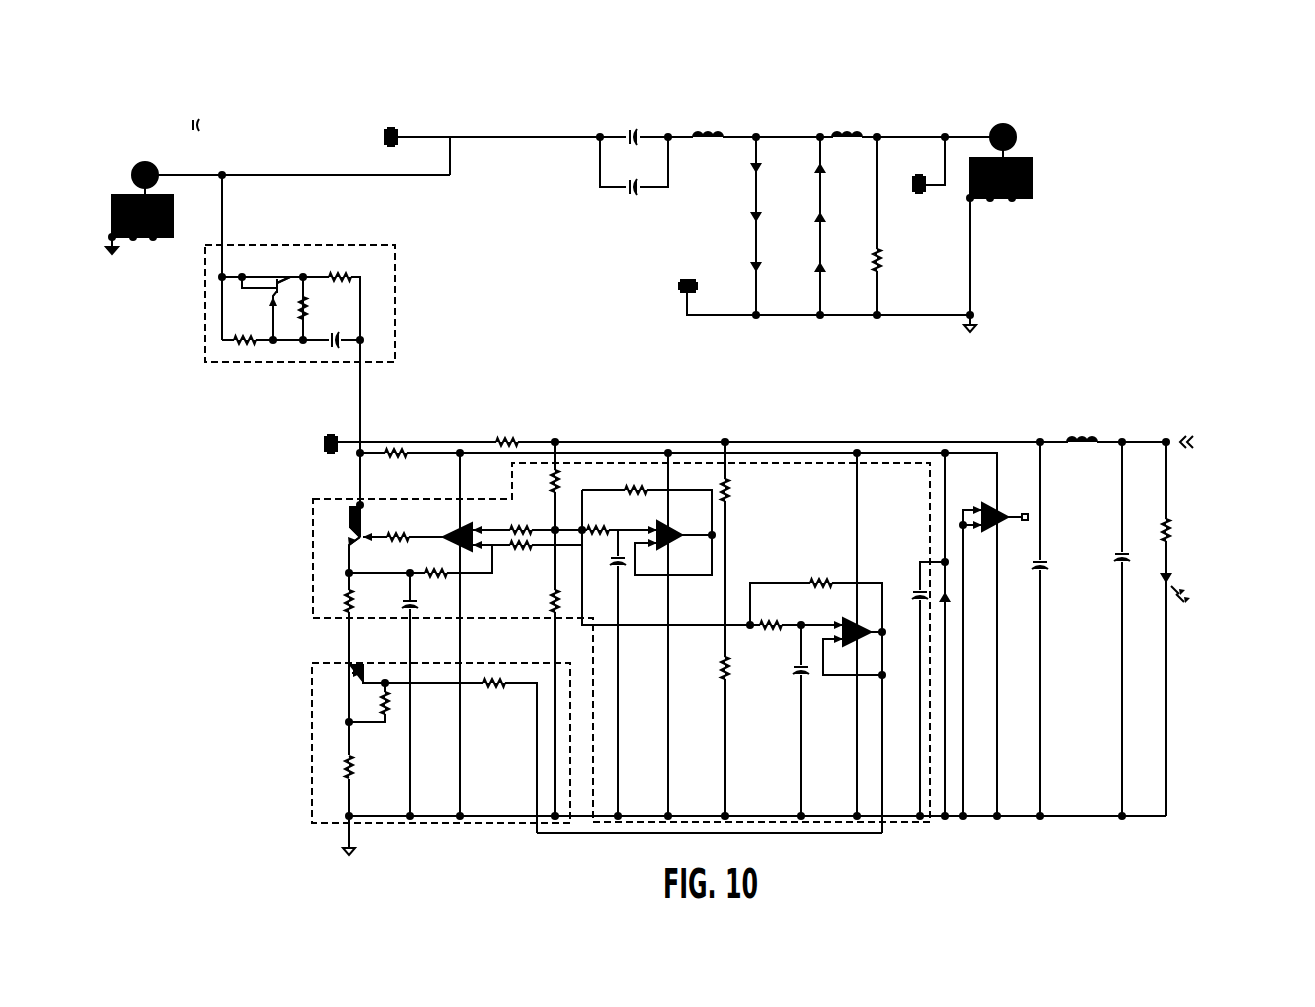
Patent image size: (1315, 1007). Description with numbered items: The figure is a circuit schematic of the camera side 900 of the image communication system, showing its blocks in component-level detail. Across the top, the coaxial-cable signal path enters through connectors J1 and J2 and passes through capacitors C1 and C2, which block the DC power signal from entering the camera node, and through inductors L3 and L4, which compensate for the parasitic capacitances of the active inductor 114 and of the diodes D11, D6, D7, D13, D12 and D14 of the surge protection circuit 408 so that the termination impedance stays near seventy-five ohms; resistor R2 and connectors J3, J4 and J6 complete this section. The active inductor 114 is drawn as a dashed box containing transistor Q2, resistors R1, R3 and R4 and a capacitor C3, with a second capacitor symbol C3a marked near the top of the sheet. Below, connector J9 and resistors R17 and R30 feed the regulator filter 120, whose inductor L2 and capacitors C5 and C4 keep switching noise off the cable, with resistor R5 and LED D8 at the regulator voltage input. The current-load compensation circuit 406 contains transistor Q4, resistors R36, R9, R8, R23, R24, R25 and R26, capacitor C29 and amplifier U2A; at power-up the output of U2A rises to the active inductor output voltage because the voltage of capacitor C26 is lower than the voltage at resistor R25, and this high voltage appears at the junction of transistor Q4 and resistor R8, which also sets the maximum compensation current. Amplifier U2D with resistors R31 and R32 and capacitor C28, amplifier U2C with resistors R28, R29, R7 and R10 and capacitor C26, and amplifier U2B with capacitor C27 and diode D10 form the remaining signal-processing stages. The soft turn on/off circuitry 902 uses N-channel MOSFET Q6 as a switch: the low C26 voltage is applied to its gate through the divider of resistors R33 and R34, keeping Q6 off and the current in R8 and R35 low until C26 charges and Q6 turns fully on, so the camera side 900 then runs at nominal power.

The camera side 900 is at (571, 188).
The active inductor 114 is at (307, 314).
The surge protection circuit 408 is at (740, 215).
The filter 120 is at (1073, 459).
The current-load compensation circuit 406 is at (298, 508).
The soft turn on/off circuitry 902 is at (298, 708).
The connector J1 is at (385, 121).
The connector J2 is at (137, 200).
The connector J3 is at (999, 158).
The connector J4 is at (917, 171).
The connector J6 is at (675, 289).
The connector J9 is at (330, 428).
The capacitor C1 is at (634, 123).
The capacitor C2 is at (634, 175).
The capacitor C3 is at (340, 327).
The capacitor C3 (top symbol) C3a is at (198, 111).
The capacitor C4 is at (1111, 554).
The capacitor C5 is at (1030, 559).
The capacitor C26 is at (789, 664).
The capacitor C27 is at (908, 595).
The capacitor C28 is at (606, 557).
The capacitor C29 is at (400, 604).
The inductor L2 is at (1082, 426).
The inductor L3 is at (705, 119).
The inductor L4 is at (847, 121).
The diode D6 is at (769, 210).
The diode D7 is at (769, 259).
The LED D8 is at (1178, 579).
The zener diode D10 is at (964, 589).
The diode D11 is at (774, 162).
The diode D12 is at (839, 210).
The diode D13 is at (839, 162).
The diode D14 is at (839, 259).
The transistor Q2 is at (275, 271).
The transistor Q4 is at (339, 526).
The N-channel MOSFET Q6 is at (340, 679).
The resistor R1 is at (340, 263).
The resistor R2 is at (891, 256).
The resistor R3 is at (293, 311).
The resistor R4 is at (246, 327).
The resistor R5 is at (1180, 530).
The resistor R7 is at (737, 493).
The resistor R8 is at (362, 604).
The resistor R9 is at (437, 561).
The resistor R10 is at (742, 674).
The resistor R17 is at (510, 428).
The resistor R23 is at (540, 480).
The resistor R24 is at (540, 600).
The resistor R25 is at (525, 517).
The resistor R26 is at (525, 558).
The resistor R28 is at (825, 567).
The resistor R29 is at (777, 612).
The resistor R30 is at (400, 467).
The resistor R31 is at (602, 517).
The resistor R32 is at (637, 478).
The resistor R33 is at (497, 698).
The resistor R34 is at (403, 706).
The resistor R35 is at (366, 769).
The resistor R36 is at (402, 523).
The element U2A is at (450, 526).
The op-amp U2B is at (1009, 506).
The op-amp U2C is at (840, 621).
The op-amp U2D is at (682, 523).